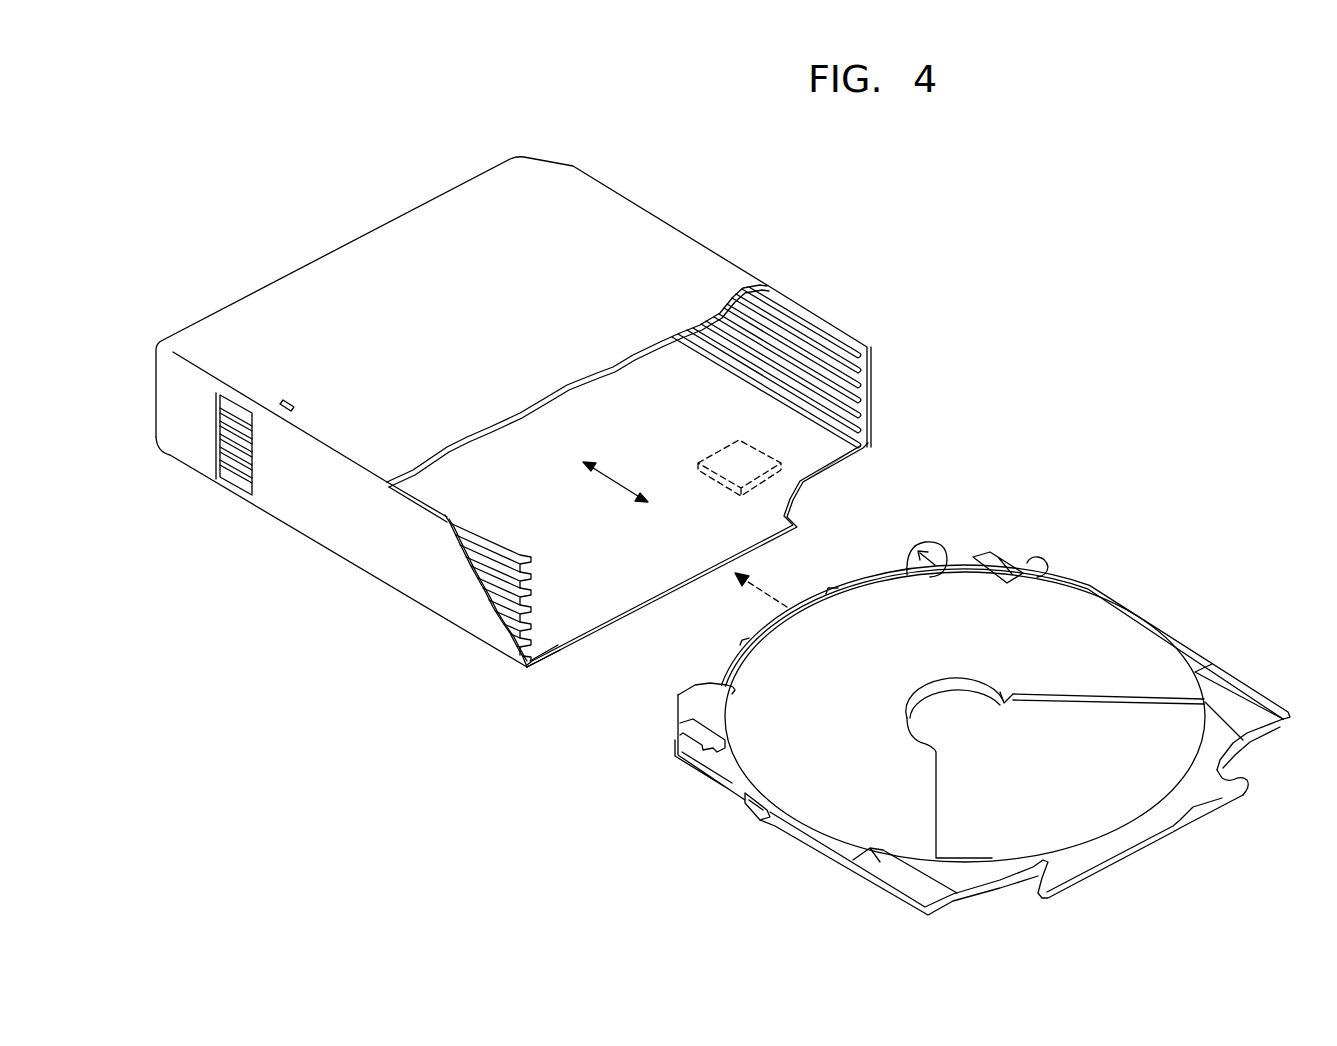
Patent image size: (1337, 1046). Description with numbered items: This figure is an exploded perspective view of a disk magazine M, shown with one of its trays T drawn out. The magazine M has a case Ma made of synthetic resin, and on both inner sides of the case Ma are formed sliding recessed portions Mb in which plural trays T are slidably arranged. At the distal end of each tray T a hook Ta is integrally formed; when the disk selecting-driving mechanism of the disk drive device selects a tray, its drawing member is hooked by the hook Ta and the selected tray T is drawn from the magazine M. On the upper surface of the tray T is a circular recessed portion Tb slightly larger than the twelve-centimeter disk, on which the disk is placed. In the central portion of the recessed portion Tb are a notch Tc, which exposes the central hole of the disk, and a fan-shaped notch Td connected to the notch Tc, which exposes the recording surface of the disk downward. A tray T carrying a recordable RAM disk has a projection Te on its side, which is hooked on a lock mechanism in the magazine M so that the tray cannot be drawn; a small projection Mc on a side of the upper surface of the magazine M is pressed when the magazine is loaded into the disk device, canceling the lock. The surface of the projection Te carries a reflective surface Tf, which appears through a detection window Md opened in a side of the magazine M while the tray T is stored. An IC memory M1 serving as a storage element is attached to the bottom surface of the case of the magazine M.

The magazine M is at (533, 416).
The case Ma is at (823, 452).
The sliding recessed portions Mb is at (762, 373).
The small projection Mc is at (286, 404).
The detection window Md is at (220, 460).
The IC memory M1 is at (757, 482).
The tray T is at (978, 705).
The hook Ta is at (1240, 786).
The circular recessed portion Tb is at (1140, 634).
The notch Tc is at (950, 692).
The fan-shaped notch Td is at (1112, 702).
The projection Te is at (732, 800).
The reflective surface Tf is at (755, 820).